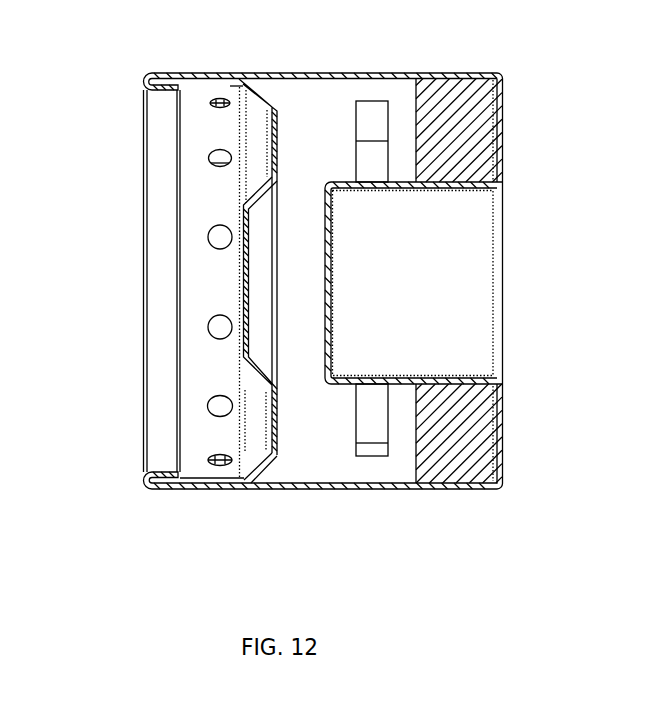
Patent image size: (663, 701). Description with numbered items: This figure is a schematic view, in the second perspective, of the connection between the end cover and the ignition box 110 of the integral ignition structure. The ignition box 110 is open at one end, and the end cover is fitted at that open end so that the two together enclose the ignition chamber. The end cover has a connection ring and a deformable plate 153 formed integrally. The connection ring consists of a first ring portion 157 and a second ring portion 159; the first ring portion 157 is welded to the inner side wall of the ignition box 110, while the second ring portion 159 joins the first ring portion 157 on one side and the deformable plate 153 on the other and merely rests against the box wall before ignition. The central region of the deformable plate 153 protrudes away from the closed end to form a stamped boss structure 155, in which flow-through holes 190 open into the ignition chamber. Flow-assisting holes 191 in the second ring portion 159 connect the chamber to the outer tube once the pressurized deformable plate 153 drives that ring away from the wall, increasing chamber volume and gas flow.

The ignition box 110 is at (330, 490).
The deformable plate 153 is at (298, 75).
The boss structure 155 is at (240, 213).
The first ring portion 157 is at (230, 473).
The second ring portion 159 is at (152, 487).
The flow-through holes 190 is at (240, 277).
The flow-assisting holes 191 is at (218, 410).